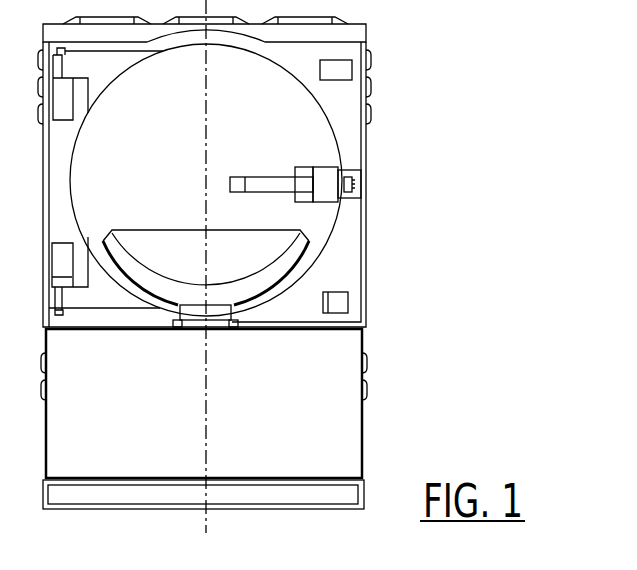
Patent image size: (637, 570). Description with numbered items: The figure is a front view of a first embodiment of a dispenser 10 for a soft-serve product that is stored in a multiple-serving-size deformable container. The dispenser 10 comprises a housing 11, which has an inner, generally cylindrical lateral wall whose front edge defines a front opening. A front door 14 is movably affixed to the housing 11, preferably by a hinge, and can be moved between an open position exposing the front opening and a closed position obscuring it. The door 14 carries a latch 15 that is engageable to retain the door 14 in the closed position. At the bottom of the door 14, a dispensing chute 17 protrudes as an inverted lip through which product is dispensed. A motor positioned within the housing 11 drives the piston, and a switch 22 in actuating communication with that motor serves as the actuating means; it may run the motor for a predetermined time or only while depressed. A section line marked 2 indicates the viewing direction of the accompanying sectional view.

The dispenser 10 is at (449, 42).
The housing 11 is at (322, 410).
The front door 14 is at (303, 143).
The latch 15 is at (325, 188).
The dispensing chute 17 is at (197, 320).
The switch 22 is at (340, 302).
The section line of FIG. 2 is at (206, 532).